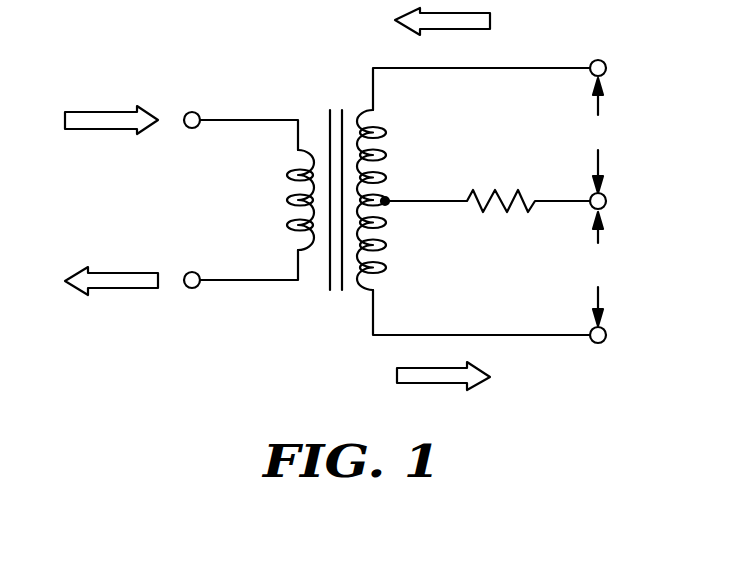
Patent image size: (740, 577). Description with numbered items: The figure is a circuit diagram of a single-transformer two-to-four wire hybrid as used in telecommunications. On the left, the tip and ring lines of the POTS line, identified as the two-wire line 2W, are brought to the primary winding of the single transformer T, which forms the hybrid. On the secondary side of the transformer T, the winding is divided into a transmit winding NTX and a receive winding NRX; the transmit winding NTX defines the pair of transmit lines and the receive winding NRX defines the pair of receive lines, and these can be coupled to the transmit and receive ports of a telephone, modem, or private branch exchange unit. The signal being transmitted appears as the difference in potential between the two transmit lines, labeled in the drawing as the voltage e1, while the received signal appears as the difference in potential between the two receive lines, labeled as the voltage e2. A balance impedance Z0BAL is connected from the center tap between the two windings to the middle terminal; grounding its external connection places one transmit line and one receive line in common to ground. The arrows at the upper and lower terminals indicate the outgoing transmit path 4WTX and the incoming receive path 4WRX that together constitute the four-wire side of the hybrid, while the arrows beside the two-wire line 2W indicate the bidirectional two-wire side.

The 2-W Line 2W is at (105, 200).
The hybrid transformer with primary winding and core T is at (263, 200).
The transmit lines NTX is at (473, 137).
The receive lines NRX is at (473, 267).
The balance impedance Z0BAL is at (485, 173).
The four-wire transmit port (4-W TX) 4WTX is at (500, 38).
The four-wire receive port (4-W RX) 4WRX is at (501, 365).
The voltage e1 across transmit winding e1 is at (595, 143).
The voltage e2 across receive winding e2 is at (598, 269).